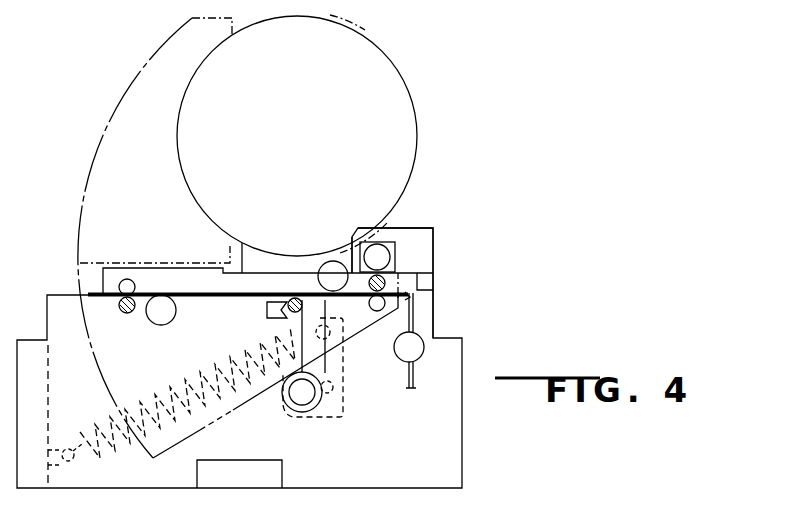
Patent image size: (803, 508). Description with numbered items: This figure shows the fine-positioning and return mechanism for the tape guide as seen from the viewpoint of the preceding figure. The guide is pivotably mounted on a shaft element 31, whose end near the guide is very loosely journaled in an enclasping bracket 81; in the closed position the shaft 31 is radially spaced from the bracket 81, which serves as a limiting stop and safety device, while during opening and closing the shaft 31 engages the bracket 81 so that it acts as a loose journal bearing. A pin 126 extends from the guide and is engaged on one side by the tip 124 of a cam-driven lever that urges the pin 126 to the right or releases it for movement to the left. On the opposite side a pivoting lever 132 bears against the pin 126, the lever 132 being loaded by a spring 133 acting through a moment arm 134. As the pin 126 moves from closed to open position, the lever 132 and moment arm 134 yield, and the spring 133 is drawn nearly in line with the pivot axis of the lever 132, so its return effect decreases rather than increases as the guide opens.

The enclasping bracket 81 is at (414, 232).
The shaft element 31 is at (384, 257).
The pin 126 is at (297, 298).
The tip 124 is at (265, 311).
The pivoting lever 132 is at (301, 322).
The moment arm 134 is at (345, 362).
The spring 133 is at (160, 392).